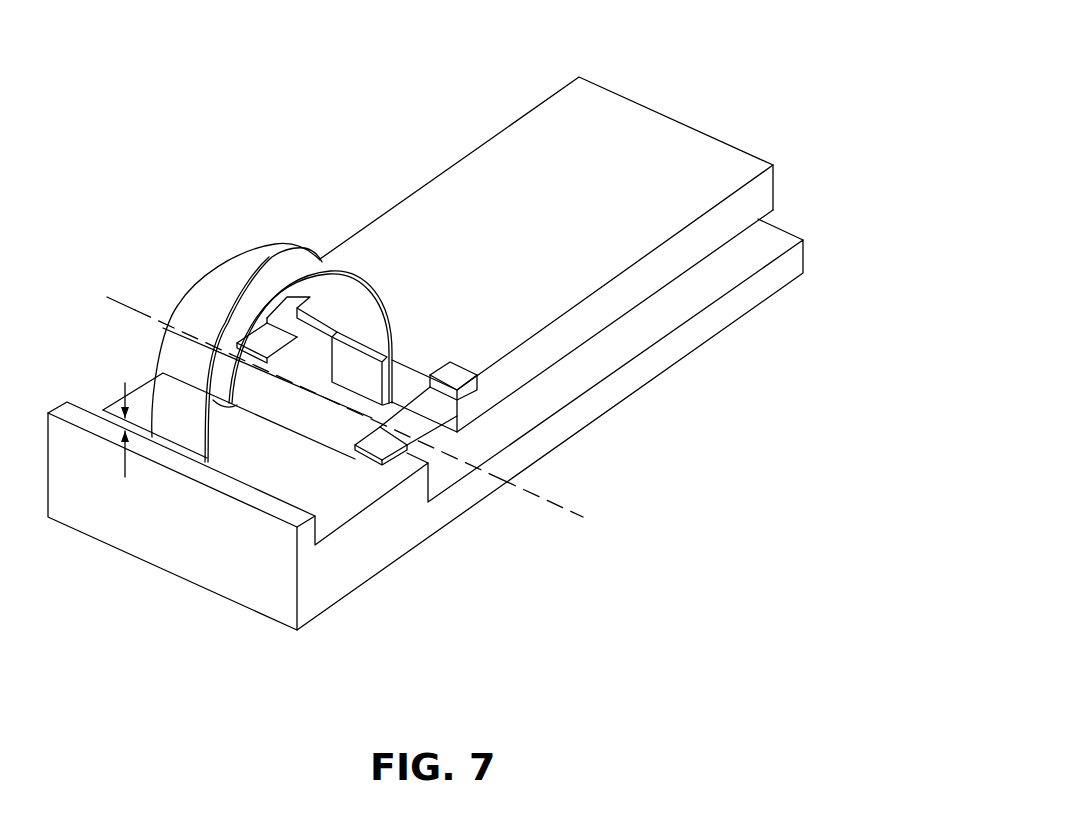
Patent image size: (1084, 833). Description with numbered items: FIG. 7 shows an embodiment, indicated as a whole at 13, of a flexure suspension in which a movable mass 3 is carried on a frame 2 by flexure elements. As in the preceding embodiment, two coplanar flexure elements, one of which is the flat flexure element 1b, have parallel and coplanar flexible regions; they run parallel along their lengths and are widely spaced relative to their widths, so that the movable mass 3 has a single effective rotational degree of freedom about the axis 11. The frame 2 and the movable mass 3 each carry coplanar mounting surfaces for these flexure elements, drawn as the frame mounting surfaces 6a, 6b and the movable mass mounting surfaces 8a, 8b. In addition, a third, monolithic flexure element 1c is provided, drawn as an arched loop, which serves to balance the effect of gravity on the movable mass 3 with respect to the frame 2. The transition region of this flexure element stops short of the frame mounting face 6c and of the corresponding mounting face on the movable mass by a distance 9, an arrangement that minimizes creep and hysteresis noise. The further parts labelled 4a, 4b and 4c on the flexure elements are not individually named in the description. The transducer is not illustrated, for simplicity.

The electronic assembly 13 is at (733, 109).
The movable mass 3 is at (626, 98).
The frame 2 is at (672, 368).
The flexure element 1b is at (440, 441).
The monolithic flexure element 1c is at (176, 269).
The first cantilever arm 4a is at (258, 338).
The second cantilever arm 4b is at (434, 424).
The third cantilever arm 4c is at (182, 331).
The frame mounting surface 6a is at (215, 402).
The frame mounting surface 6b is at (382, 445).
The frame mounting face 6c is at (182, 447).
The movable mass mounting surface 8a is at (277, 306).
The movable mass mounting surface 8b is at (473, 400).
The distance 9 is at (118, 435).
The axis 11 is at (533, 492).